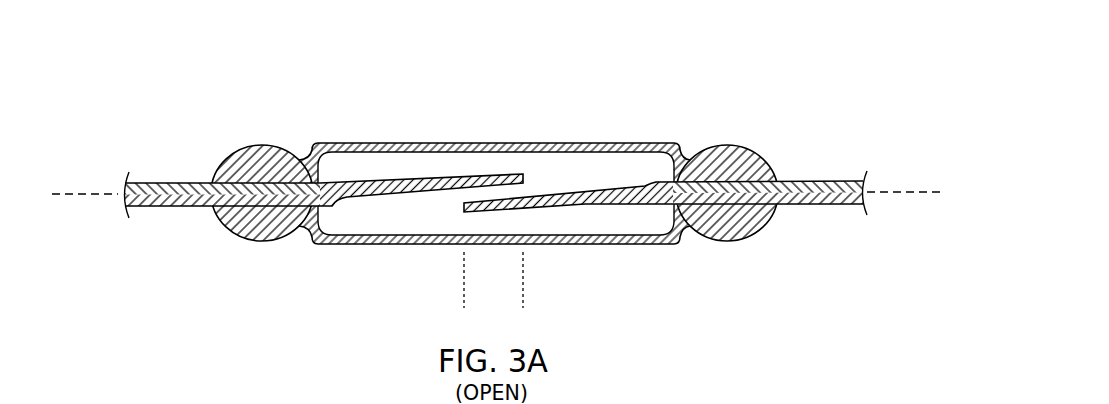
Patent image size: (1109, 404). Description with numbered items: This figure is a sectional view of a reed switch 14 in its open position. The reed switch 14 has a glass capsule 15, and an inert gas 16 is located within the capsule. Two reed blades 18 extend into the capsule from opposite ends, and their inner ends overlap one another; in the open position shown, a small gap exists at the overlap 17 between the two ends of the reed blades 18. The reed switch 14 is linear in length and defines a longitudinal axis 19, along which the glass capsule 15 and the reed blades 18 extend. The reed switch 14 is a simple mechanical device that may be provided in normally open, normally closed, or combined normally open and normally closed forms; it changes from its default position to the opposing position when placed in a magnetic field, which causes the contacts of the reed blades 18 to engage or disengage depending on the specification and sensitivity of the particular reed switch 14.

The reed switch 14 is at (502, 163).
The glass capsule 15 is at (748, 147).
The inert gas 16 is at (620, 162).
The overlap 17 is at (417, 292).
The reed blades 18 is at (180, 183).
The longitudinal axis 19 is at (95, 192).